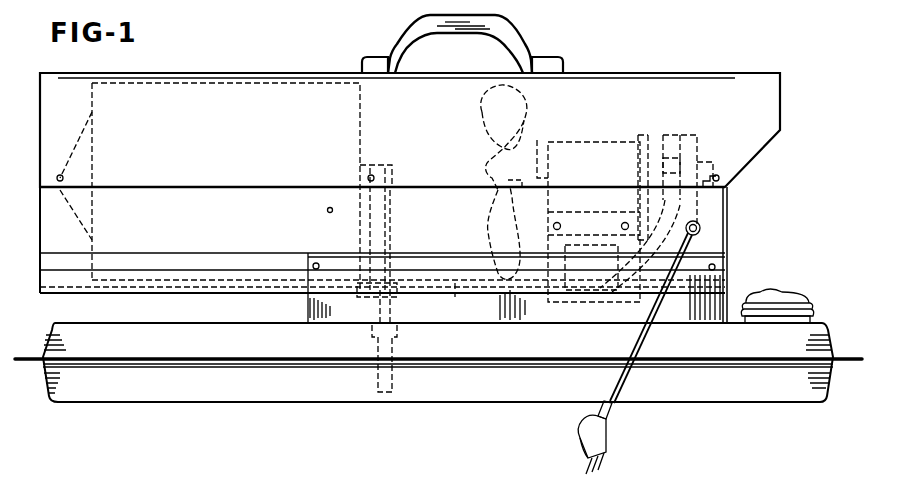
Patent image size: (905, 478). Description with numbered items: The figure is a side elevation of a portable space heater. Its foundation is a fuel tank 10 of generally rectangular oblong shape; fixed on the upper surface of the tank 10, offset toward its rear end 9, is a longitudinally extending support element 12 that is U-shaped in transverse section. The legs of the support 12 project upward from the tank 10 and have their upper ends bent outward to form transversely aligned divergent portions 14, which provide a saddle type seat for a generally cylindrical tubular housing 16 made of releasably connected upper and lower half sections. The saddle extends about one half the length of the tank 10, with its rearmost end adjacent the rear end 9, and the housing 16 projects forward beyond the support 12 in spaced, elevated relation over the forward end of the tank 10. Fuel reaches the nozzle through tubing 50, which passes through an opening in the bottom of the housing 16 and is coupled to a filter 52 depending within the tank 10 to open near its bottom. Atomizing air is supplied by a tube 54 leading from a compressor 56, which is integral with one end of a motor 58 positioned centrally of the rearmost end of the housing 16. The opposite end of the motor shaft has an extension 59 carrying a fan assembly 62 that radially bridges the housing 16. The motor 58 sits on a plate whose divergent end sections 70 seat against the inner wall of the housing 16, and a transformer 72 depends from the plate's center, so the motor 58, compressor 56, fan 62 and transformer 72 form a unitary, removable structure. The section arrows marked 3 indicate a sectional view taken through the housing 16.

The section line of FIG. 3 is at (332, 158).
The rear end 9 is at (820, 345).
The fuel tank 10 is at (316, 397).
The support element 12 is at (308, 300).
The divergent portions 14 is at (463, 255).
The tubular housing 16 is at (184, 227).
The tubing 50 is at (390, 225).
The filter 52 is at (372, 352).
The tube 54 is at (462, 300).
The compressor 56 is at (677, 133).
The motor 58 is at (592, 142).
The extension 59 is at (537, 150).
The fan assembly 62 is at (482, 110).
The end sections 70 is at (592, 212).
The transformer 72 is at (595, 305).